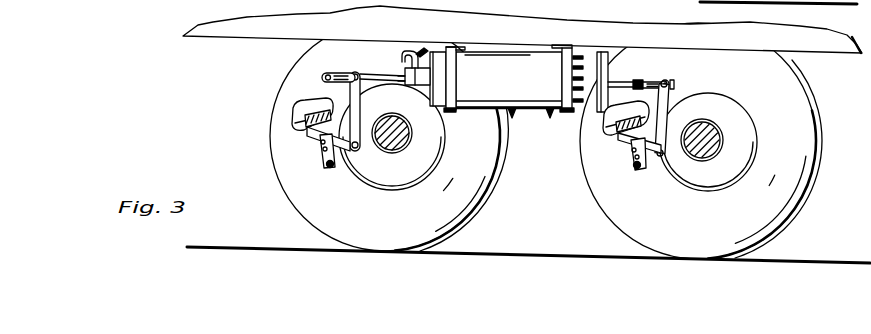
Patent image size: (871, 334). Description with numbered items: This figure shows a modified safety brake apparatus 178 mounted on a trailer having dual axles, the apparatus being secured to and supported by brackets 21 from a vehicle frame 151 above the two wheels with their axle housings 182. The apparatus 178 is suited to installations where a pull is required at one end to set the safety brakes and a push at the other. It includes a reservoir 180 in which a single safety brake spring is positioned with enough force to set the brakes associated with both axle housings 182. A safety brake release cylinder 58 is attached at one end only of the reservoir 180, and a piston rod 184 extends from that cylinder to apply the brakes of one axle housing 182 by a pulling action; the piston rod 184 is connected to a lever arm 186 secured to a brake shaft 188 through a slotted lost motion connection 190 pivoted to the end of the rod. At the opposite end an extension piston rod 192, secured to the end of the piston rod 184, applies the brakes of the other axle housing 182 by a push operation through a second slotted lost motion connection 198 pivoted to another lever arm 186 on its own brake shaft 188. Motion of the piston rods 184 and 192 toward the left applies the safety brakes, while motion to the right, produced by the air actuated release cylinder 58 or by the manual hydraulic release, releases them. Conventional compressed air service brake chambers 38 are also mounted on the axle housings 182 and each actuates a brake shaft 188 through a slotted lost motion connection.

The vehicle frame 151 is at (520, 34).
The brackets 21 is at (451, 46).
The safety brake release cylinder 58 is at (587, 67).
The reservoir 180 is at (527, 102).
The safety brake apparatus 178 is at (549, 117).
The piston rod 184 is at (609, 49).
The slotted lost motion connection 190 is at (673, 83).
The lever arm 186 is at (352, 92).
The extension piston rod 192 is at (377, 73).
The slotted lost motion connection 198 is at (332, 70).
The service brake chambers 38 is at (302, 130).
The brake shaft 188 is at (353, 148).
The axle housings 182 is at (397, 153).